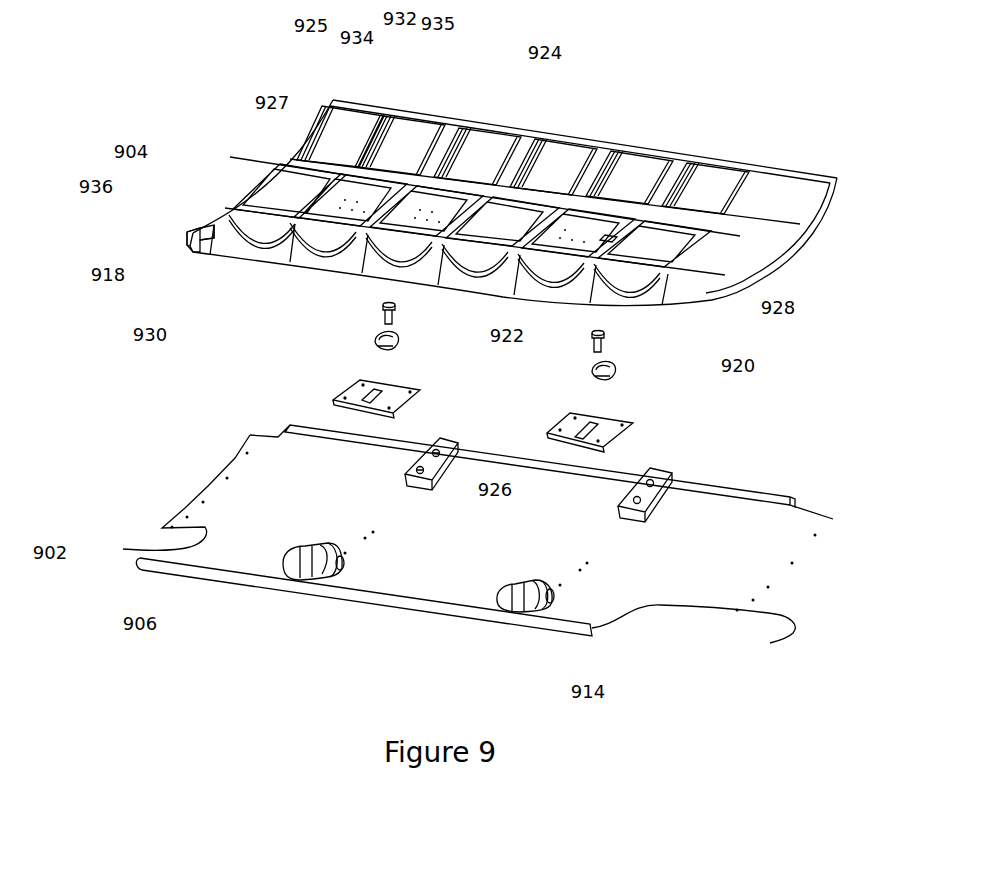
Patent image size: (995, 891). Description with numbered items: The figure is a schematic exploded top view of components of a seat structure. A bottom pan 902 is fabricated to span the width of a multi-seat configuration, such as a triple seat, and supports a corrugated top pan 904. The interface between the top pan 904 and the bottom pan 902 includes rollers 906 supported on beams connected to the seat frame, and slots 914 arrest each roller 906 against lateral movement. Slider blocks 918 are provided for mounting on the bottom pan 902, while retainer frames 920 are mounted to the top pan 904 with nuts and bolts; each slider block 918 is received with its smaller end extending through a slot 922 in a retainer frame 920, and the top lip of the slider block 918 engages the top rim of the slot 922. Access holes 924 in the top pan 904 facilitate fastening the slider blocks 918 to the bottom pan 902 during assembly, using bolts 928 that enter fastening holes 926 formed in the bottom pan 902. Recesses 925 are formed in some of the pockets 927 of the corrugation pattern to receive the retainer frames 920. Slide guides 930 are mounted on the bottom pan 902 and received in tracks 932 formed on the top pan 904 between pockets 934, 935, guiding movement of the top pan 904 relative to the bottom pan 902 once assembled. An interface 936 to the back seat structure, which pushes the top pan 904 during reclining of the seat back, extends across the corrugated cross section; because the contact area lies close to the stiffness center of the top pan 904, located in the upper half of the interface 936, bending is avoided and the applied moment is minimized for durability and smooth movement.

The bottom pan 902 is at (123, 549).
The top pan 904 is at (297, 213).
The rollers 906 is at (490, 603).
The slots 914 is at (536, 611).
The slider blocks 918 is at (377, 348).
The retainer frames 920 is at (607, 425).
The slot 922 is at (583, 429).
The access holes 924 is at (607, 236).
The recesses 925 is at (372, 200).
The fastening holes 926 is at (583, 558).
The pockets 927 is at (347, 193).
The bolts 928 is at (614, 340).
The slide guides 930 is at (406, 467).
The tracks 932 is at (475, 115).
The pocket 934 is at (430, 130).
The pocket 935 is at (502, 143).
The interface 936 is at (198, 243).